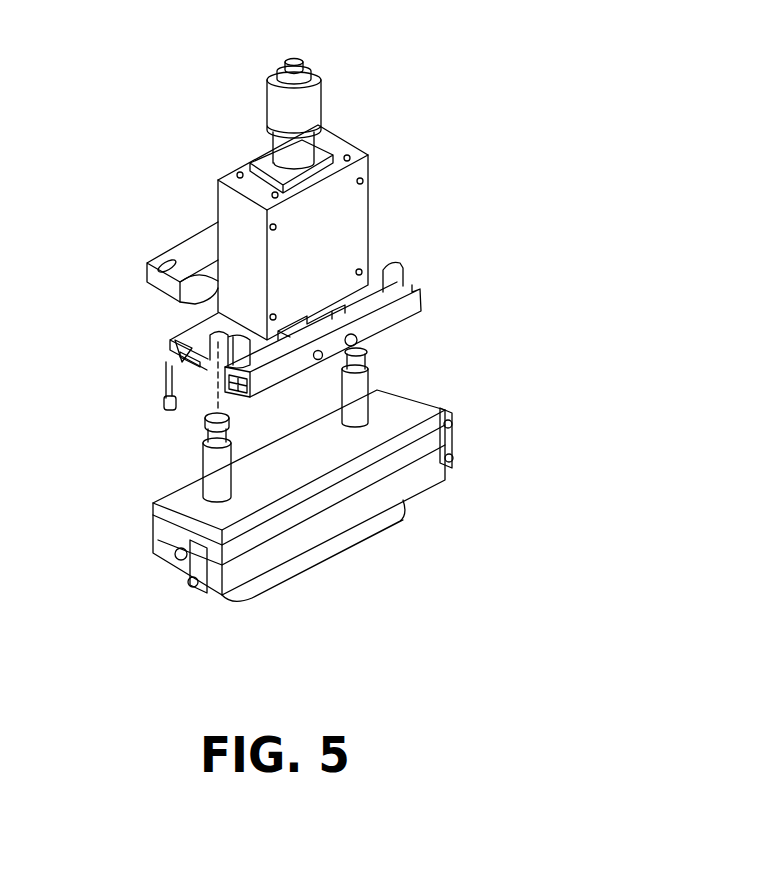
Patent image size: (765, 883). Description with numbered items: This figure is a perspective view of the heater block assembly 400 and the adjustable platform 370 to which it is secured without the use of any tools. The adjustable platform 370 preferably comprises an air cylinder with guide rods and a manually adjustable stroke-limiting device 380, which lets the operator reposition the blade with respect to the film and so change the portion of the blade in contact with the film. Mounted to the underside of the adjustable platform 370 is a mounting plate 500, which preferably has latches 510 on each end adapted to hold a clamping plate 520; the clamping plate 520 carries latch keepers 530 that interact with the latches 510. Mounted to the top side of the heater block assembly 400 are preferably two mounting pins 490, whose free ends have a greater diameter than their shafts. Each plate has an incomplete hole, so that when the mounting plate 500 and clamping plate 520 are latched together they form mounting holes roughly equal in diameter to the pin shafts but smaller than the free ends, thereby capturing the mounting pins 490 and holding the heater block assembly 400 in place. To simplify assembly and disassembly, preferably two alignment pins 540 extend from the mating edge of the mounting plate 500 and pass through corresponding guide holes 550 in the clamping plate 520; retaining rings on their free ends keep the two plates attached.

The manually adjustable stroke-limiting device 380 is at (270, 70).
The adjustable platform 370 is at (202, 238).
The mounting plate 500 is at (178, 332).
The latches 510 is at (173, 385).
The latch keepers 530 is at (210, 408).
The mounting pins 490 is at (190, 470).
The clamping plate 520 is at (395, 307).
The alignment pins 540 is at (318, 318).
The guide holes 550 is at (360, 343).
The heater block assembly 400 is at (395, 508).